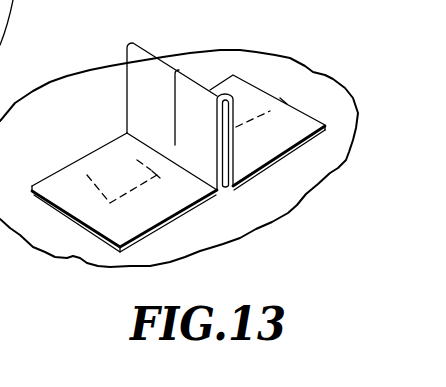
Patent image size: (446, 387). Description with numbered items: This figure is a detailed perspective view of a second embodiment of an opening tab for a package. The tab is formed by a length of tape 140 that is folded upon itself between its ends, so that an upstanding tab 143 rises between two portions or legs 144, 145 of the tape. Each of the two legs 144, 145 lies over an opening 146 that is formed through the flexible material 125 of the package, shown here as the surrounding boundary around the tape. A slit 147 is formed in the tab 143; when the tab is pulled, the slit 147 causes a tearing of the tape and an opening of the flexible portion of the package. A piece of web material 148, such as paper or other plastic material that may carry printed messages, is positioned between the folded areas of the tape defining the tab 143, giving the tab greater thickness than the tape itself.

The flexible material 125 is at (293, 58).
The length of tape 140 is at (178, 213).
The tab 143 is at (134, 65).
The leg 144 is at (108, 217).
The leg 145 is at (293, 132).
The opening 146 is at (84, 170).
The slit 147 is at (175, 103).
The web material 148 is at (225, 185).